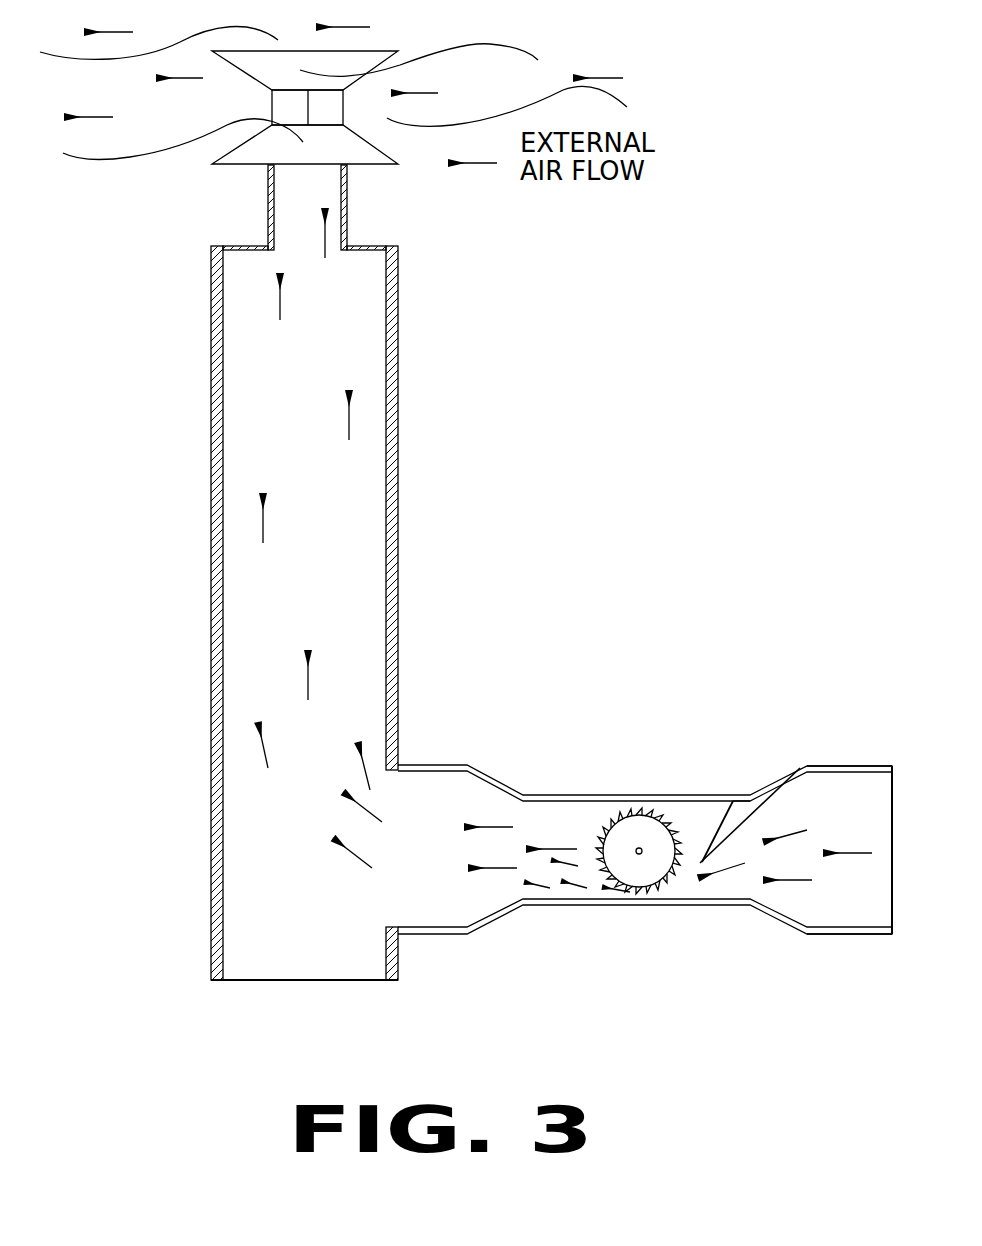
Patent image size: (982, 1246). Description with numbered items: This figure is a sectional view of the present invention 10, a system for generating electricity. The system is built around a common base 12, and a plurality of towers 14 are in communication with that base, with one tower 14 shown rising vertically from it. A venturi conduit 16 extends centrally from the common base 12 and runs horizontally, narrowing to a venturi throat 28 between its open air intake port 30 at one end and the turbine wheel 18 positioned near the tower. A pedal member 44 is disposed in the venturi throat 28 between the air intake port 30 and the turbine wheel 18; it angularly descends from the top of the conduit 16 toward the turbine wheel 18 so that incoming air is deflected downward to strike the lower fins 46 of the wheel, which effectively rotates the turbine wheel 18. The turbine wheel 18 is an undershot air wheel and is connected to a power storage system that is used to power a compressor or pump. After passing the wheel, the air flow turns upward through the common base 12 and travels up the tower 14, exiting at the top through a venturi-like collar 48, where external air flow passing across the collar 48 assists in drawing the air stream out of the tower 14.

The present invention 10 is at (776, 114).
The common base 12 is at (398, 953).
The tower 14 is at (398, 425).
The venturi conduit 16 is at (442, 766).
The turbine wheel 18 is at (636, 870).
The venturi throat 28 is at (707, 800).
The air intake port 30 is at (838, 935).
The pedal member 44 is at (788, 772).
The lower fins 46 is at (650, 812).
The venturi-like collar 48 is at (360, 165).